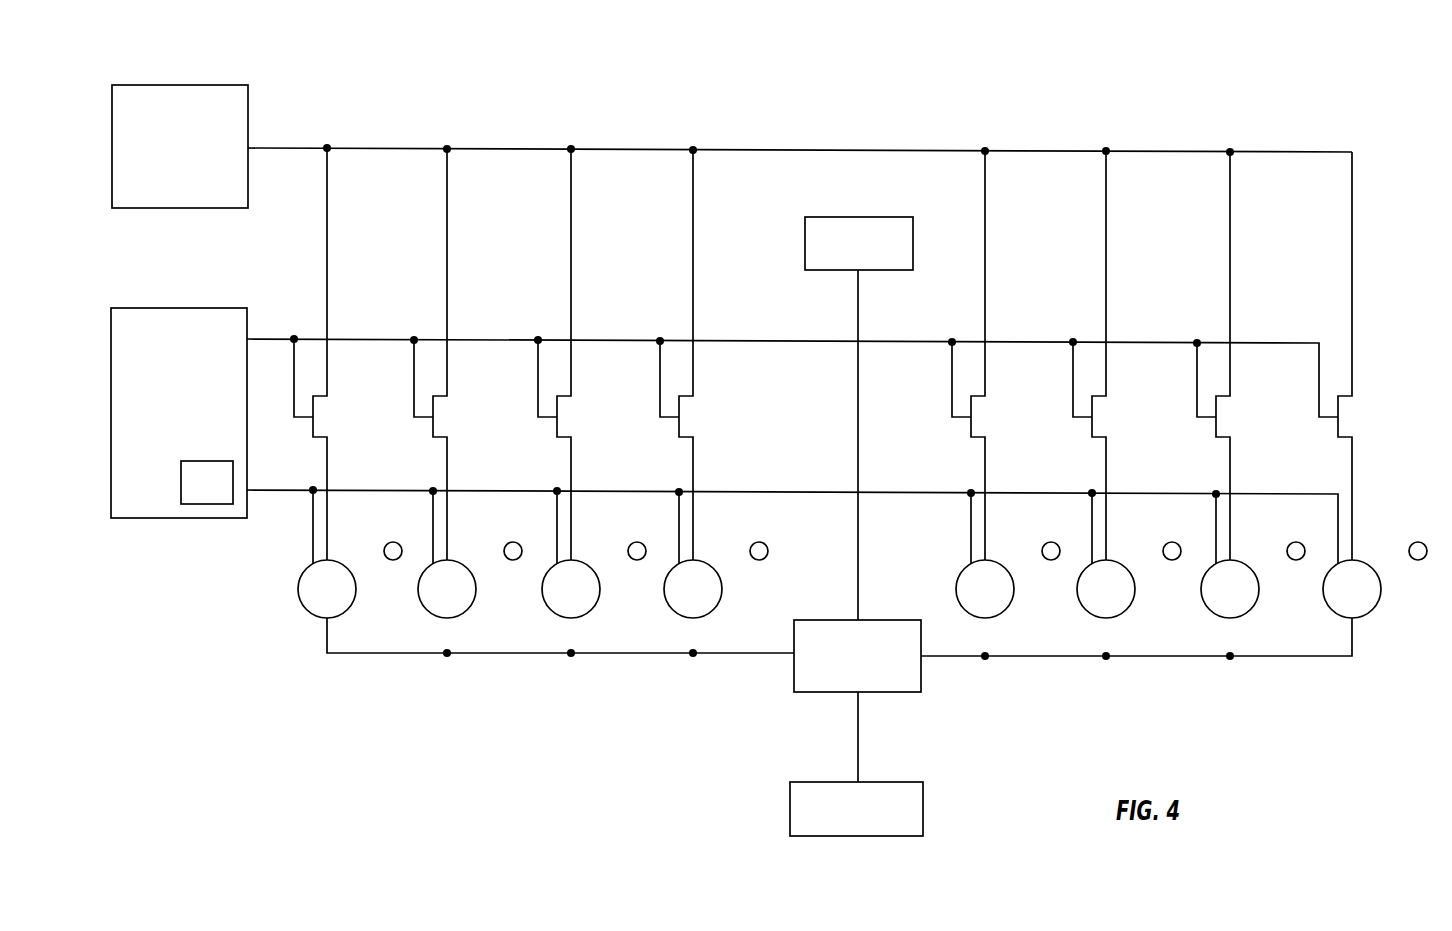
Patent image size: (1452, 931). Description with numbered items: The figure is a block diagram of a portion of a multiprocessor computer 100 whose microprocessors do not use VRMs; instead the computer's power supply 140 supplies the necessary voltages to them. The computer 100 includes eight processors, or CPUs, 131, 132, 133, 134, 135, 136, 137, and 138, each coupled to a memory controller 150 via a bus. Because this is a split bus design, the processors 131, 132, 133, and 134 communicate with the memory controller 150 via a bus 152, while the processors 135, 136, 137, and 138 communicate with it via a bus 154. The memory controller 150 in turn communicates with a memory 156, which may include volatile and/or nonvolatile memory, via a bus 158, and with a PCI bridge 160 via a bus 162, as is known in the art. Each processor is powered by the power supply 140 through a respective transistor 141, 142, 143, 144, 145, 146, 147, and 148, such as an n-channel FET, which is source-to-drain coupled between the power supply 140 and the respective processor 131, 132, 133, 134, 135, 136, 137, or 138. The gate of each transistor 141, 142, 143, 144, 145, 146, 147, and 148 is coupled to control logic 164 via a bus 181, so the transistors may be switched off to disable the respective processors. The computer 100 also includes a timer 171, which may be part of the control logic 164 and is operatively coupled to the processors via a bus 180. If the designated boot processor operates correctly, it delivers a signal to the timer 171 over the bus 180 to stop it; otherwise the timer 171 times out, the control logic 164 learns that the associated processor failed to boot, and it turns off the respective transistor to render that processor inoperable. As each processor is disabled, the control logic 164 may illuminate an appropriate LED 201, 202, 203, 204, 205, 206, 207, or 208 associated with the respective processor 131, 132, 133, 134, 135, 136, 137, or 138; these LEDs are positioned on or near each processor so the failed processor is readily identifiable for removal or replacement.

The computer 100 is at (1081, 98).
The power supply 140 is at (180, 85).
The control logic 164 is at (181, 308).
The timer 171 is at (193, 505).
The bus 181 is at (271, 335).
The bus 180 is at (291, 492).
The memory 156 is at (843, 217).
The bus 158 is at (857, 445).
The memory controller 150 is at (843, 620).
The bus 162 is at (857, 727).
The PCI bridge 160 is at (840, 782).
The bus 152 is at (537, 655).
The bus 154 is at (1138, 658).
The transistor 141 is at (313, 432).
The transistor 142 is at (433, 432).
The transistor 143 is at (557, 432).
The transistor 144 is at (679, 432).
The transistor 145 is at (971, 432).
The transistor 146 is at (1092, 432).
The transistor 147 is at (1216, 432).
The transistor 148 is at (1338, 432).
The processor 131 is at (306, 609).
The processor 132 is at (426, 609).
The processor 133 is at (550, 609).
The processor 134 is at (672, 609).
The processor 135 is at (963, 570).
The processor 136 is at (1085, 609).
The processor 137 is at (1209, 609).
The processor 138 is at (1331, 609).
The LED 201 is at (393, 542).
The LED 202 is at (513, 542).
The LED 203 is at (637, 542).
The LED 204 is at (759, 542).
The LED 205 is at (1051, 542).
The LED 206 is at (1172, 542).
The LED 207 is at (1296, 542).
The LED 208 is at (1418, 542).